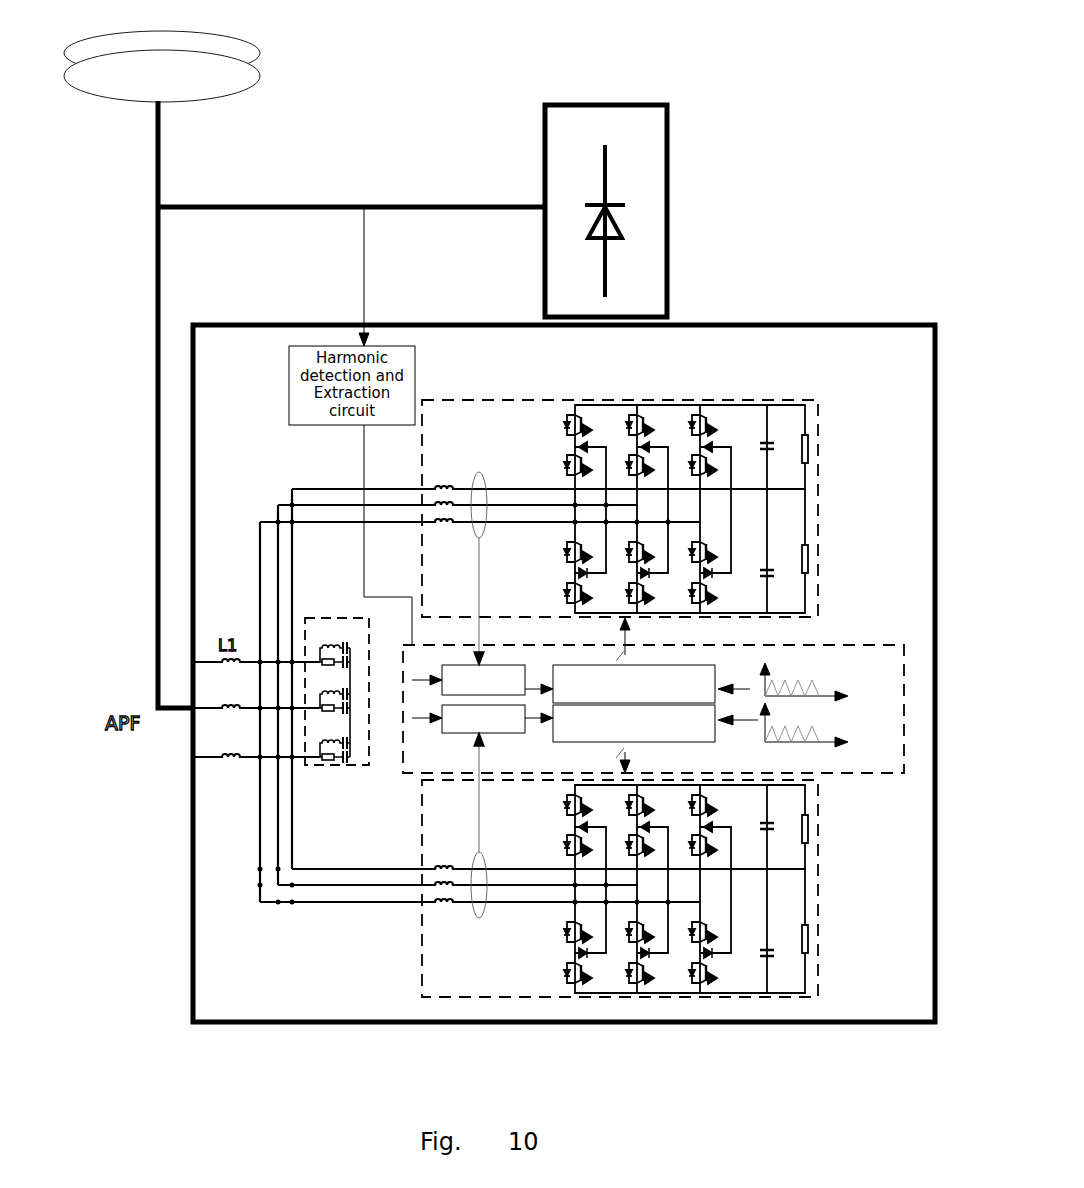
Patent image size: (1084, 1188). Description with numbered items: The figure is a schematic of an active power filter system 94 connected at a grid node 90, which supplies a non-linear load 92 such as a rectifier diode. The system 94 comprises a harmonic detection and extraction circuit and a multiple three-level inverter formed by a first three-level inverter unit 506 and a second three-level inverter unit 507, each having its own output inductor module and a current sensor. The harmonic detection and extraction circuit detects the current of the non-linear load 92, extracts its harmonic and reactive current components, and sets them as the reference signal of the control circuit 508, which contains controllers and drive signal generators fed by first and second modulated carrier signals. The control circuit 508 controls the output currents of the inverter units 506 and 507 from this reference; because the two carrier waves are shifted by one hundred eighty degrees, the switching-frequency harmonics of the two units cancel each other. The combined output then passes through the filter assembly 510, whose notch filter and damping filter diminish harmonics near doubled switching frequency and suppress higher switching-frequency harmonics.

The grid node 90 is at (258, 78).
The non-linear load 92 is at (668, 172).
The active power filter system 94 is at (762, 323).
The first three-level inverter unit 506 is at (728, 401).
The second three-level inverter unit 507 is at (820, 957).
The control circuit 508 is at (850, 645).
The filter assembly 510 is at (330, 768).